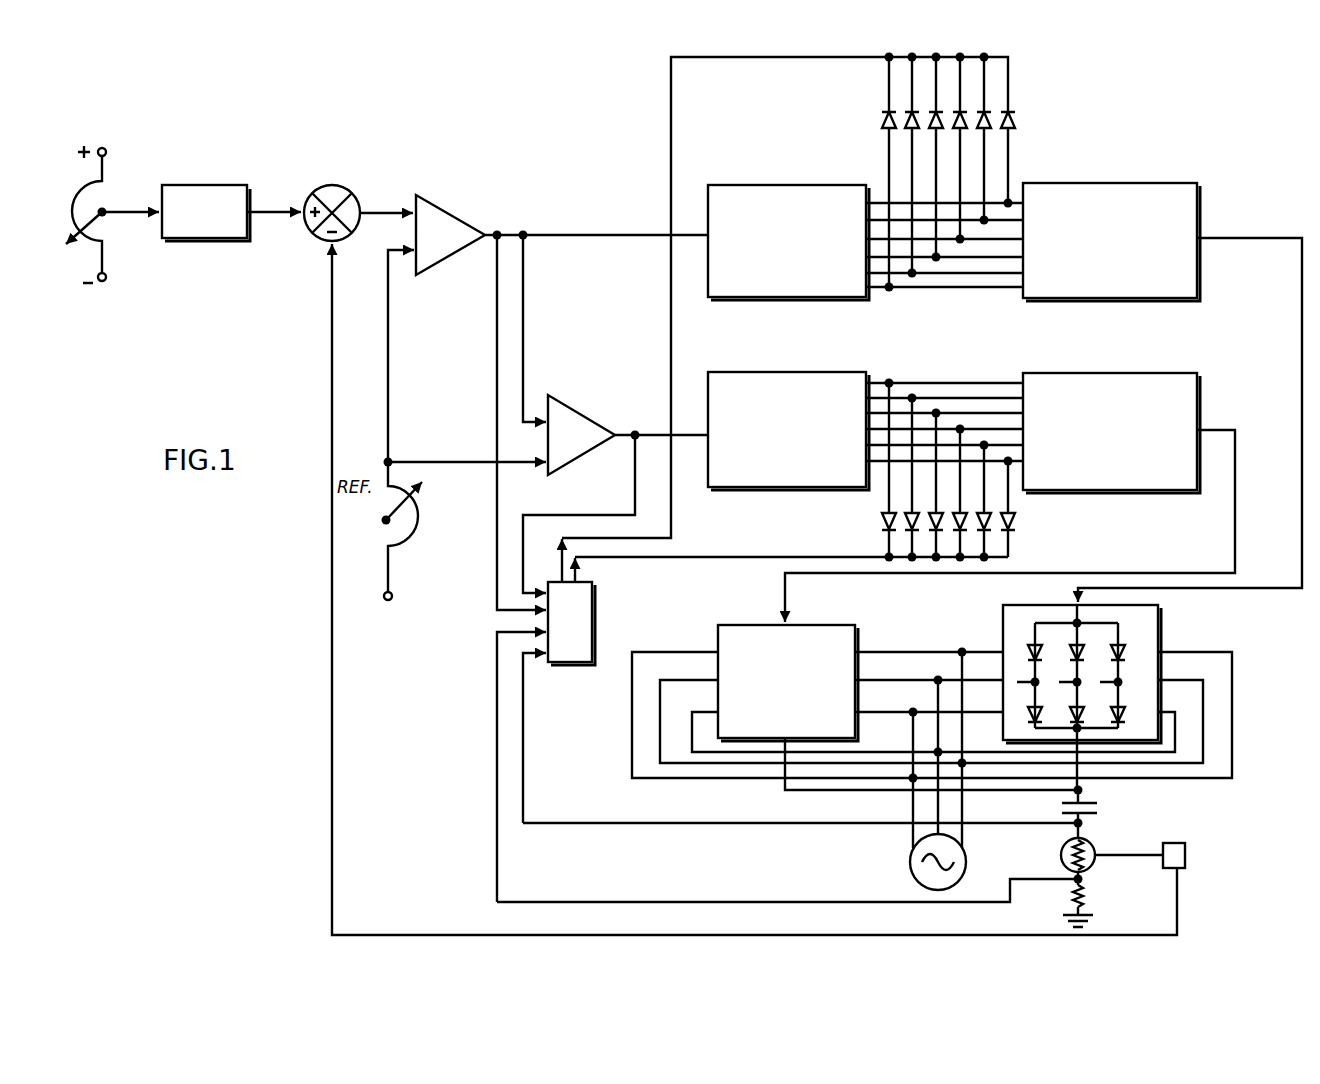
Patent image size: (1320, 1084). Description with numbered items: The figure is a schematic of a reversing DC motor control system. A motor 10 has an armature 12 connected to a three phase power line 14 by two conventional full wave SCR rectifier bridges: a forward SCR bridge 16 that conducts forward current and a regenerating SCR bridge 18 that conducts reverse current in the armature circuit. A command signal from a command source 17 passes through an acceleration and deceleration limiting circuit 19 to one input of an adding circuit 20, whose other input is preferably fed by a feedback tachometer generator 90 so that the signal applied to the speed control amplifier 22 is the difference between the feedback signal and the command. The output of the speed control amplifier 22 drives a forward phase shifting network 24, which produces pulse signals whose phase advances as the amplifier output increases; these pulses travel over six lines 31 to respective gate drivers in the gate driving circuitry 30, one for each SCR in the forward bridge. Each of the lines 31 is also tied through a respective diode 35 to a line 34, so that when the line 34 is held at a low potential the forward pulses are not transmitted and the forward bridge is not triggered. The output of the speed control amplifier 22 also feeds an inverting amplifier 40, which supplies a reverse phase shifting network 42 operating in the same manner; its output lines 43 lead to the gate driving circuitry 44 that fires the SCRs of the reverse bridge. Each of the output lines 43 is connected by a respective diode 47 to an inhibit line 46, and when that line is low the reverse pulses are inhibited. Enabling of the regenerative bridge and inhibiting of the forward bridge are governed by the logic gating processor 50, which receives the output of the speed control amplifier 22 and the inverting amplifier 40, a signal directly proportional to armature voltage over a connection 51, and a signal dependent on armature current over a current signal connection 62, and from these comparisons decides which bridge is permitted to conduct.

The motor 10 is at (1094, 840).
The armature 12 is at (1060, 856).
The three phase power line 14 is at (910, 858).
The forward SCR rectifier bridge 16 is at (1159, 632).
The command source 17 is at (72, 212).
The regenerating SCR rectifier bridge 18 is at (718, 630).
The acceleration and deceleration limiting circuit 19 is at (197, 240).
The adding circuit 20 is at (336, 181).
The speed control amplifier 22 is at (460, 221).
The forward phase shifting network 24 is at (789, 185).
The gate driving circuitry 30 is at (1104, 182).
The lines 31 is at (946, 287).
The line 34 is at (671, 130).
The diodes 35 is at (882, 113).
The inverting amplifier 40 is at (592, 424).
The reverse phase shifting network 42 is at (799, 372).
The output lines 43 is at (947, 394).
The gate driving circuitry 44 is at (1112, 372).
The inhibit line 46 is at (676, 557).
The diodes 47 is at (1018, 522).
The logic gating processor 50 is at (594, 623).
The connection 51 is at (634, 823).
The current signal connection 62 is at (596, 902).
The feedback tachometer generator 90 is at (1186, 857).